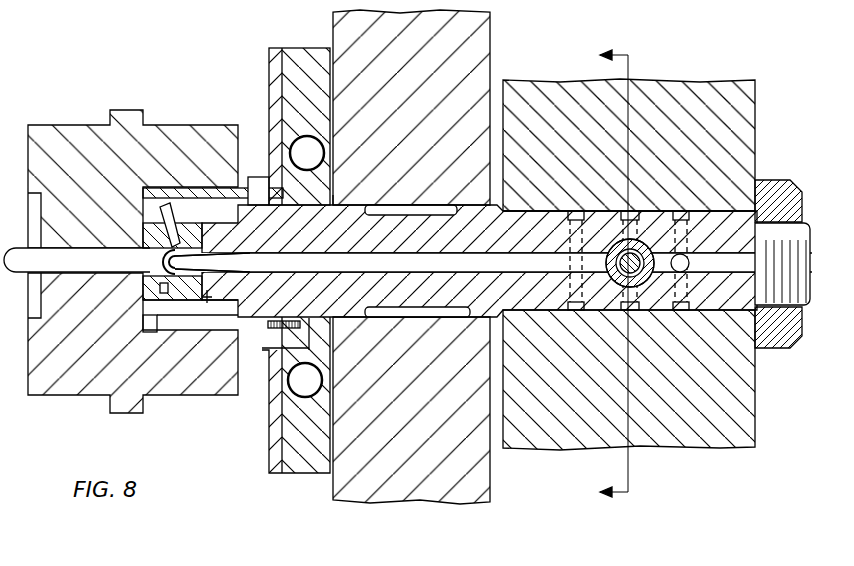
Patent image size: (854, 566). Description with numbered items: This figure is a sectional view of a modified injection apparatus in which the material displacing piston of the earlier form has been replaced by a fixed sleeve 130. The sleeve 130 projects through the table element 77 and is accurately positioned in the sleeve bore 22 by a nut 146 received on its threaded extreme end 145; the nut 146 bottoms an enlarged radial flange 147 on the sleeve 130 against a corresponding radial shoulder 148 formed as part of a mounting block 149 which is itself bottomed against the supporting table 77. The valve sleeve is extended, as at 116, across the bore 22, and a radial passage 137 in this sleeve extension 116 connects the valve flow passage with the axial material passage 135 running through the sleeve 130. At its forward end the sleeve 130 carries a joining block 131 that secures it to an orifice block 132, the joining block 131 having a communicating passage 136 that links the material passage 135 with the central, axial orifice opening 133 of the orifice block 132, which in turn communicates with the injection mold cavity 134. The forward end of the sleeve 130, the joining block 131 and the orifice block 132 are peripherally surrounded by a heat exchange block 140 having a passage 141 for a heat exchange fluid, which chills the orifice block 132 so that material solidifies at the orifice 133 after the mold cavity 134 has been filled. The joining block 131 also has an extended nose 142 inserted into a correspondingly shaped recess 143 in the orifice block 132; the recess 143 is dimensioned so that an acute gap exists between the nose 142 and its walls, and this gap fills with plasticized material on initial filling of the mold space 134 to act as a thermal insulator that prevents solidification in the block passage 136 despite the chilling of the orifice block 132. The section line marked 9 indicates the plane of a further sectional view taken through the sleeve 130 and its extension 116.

The sleeve bore 22 is at (690, 211).
The table element 77 is at (386, 487).
The valve sleeve extension 116 is at (672, 272).
The fixed sleeve 130 is at (716, 295).
The joining block 131 is at (203, 300).
The orifice block 132 is at (200, 278).
The orifice opening 133 is at (150, 263).
The injection mold cavity 134 is at (77, 275).
The axial material passage 135 is at (493, 262).
The communicating passage 136 is at (225, 262).
The radial passage 137 is at (606, 263).
The heat exchange block 140 is at (150, 188).
The passage 141 is at (258, 190).
The extended nose 142 is at (178, 275).
The recess 143 is at (178, 240).
The threaded end 145 is at (795, 300).
The nut 146 is at (778, 187).
The enlarged radial flange 147 is at (338, 153).
The radial shoulder 148 is at (335, 184).
The mounting block 149 is at (302, 462).
The section line 9- 9 is at (626, 270).